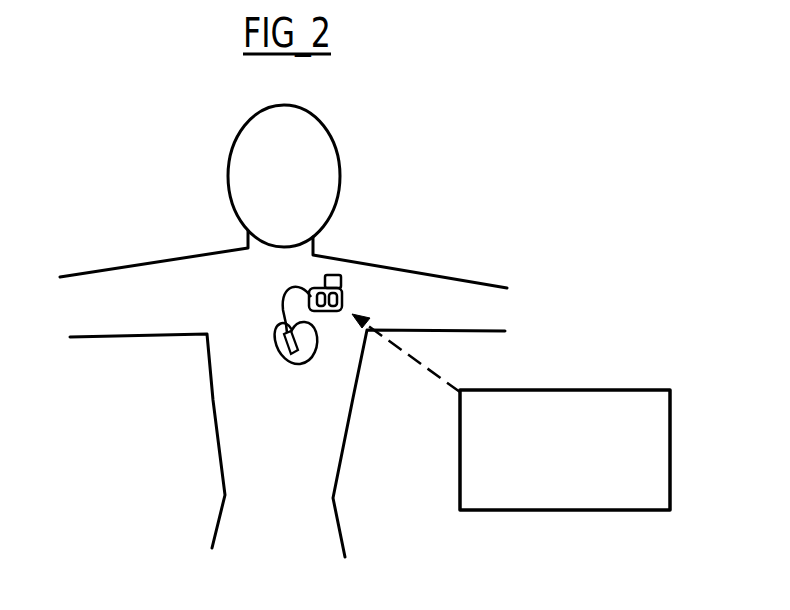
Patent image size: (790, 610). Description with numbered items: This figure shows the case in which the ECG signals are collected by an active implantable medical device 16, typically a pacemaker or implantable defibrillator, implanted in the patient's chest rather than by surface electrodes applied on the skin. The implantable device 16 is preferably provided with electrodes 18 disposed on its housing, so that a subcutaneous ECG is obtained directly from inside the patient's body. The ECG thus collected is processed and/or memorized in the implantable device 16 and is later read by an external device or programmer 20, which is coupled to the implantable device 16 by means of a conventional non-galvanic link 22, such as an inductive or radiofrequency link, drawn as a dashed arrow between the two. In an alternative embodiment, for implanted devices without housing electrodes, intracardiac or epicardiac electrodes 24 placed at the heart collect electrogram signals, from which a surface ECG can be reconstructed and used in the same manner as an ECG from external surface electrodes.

The active implantable medical device 16 is at (334, 276).
The electrodes 18 is at (342, 312).
The external device or programmer (PGM) 20 is at (586, 390).
The non-galvanic link 22 is at (405, 356).
The intracardiac or epicardiac electrodes 24 is at (277, 358).